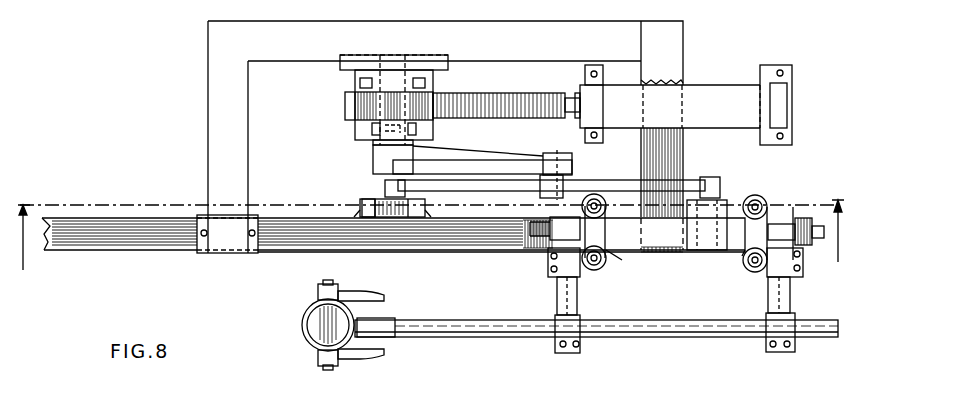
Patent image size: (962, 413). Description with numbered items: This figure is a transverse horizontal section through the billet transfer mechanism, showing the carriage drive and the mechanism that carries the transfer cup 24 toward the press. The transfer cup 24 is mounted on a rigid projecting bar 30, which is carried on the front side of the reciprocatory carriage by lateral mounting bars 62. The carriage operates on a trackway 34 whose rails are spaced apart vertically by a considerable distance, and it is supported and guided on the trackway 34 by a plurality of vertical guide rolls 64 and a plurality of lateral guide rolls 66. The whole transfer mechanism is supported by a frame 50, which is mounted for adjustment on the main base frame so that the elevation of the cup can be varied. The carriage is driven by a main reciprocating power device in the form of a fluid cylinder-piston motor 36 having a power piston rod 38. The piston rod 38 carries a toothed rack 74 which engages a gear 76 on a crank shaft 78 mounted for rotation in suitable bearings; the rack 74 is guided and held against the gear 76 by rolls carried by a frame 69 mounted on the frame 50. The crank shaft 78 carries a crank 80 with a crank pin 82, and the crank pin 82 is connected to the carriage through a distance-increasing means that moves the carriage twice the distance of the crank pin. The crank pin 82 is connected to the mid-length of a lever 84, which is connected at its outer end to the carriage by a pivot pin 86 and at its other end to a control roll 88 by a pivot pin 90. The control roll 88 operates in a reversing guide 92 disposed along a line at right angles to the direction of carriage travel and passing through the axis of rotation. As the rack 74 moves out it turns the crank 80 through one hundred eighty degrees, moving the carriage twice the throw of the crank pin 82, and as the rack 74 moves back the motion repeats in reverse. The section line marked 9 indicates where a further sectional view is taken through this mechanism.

The section line 9- 9 is at (431, 253).
The transfer cup 24 is at (314, 346).
The projecting bar 30 is at (686, 320).
The trackway 34 is at (98, 252).
The power actuating device 36 is at (736, 85).
The power piston rod 38 is at (578, 90).
The frame 50 is at (200, 158).
The lateral mounting bars 62 is at (557, 298).
The vertical guide rolls 64 is at (812, 220).
The lateral guide rolls 66 is at (606, 207).
The frame 69 is at (355, 130).
The toothed rack 74 is at (514, 92).
The gear 76 is at (345, 107).
The crank shaft 78 is at (418, 136).
The crank 80 is at (522, 160).
The crank pin 82 is at (560, 153).
The lever 84 is at (630, 180).
The pivot pin 86 is at (706, 180).
The control roll 88 is at (412, 199).
The pivot pin 90 is at (386, 197).
The reversing guide 92 is at (362, 203).